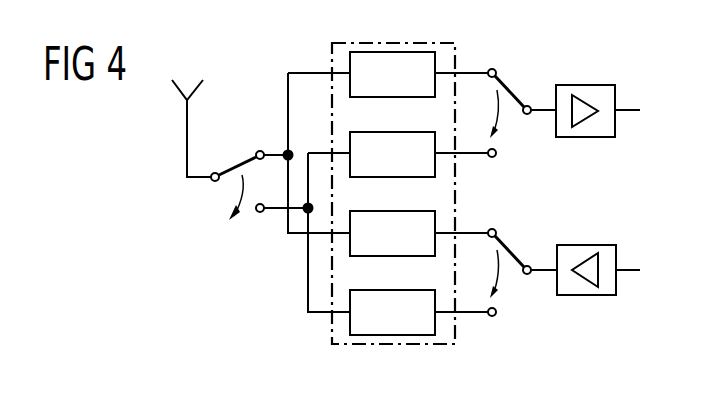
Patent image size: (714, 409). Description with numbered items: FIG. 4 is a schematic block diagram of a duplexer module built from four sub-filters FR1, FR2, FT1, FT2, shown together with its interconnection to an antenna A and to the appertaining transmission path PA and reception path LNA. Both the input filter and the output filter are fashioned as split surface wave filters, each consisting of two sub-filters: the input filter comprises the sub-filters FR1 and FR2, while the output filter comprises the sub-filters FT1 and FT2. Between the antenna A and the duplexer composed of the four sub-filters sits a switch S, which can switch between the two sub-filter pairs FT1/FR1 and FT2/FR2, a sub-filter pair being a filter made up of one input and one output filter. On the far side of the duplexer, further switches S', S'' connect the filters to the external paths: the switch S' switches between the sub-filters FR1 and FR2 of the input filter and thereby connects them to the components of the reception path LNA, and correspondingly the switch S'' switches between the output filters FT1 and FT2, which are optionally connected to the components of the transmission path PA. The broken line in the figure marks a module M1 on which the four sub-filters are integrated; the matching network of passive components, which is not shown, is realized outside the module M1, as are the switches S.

The antenna A is at (177, 95).
The switch S is at (259, 163).
The module M1 is at (330, 43).
The sub-filter FR1 is at (392, 74).
The sub-filter FR2 is at (392, 154).
The sub-filter FT1 is at (392, 233).
The sub-filter FT2 is at (392, 312).
The switch S' is at (522, 94).
The switch S'' is at (526, 254).
The reception path LNA is at (585, 85).
The transmission path PA is at (585, 245).